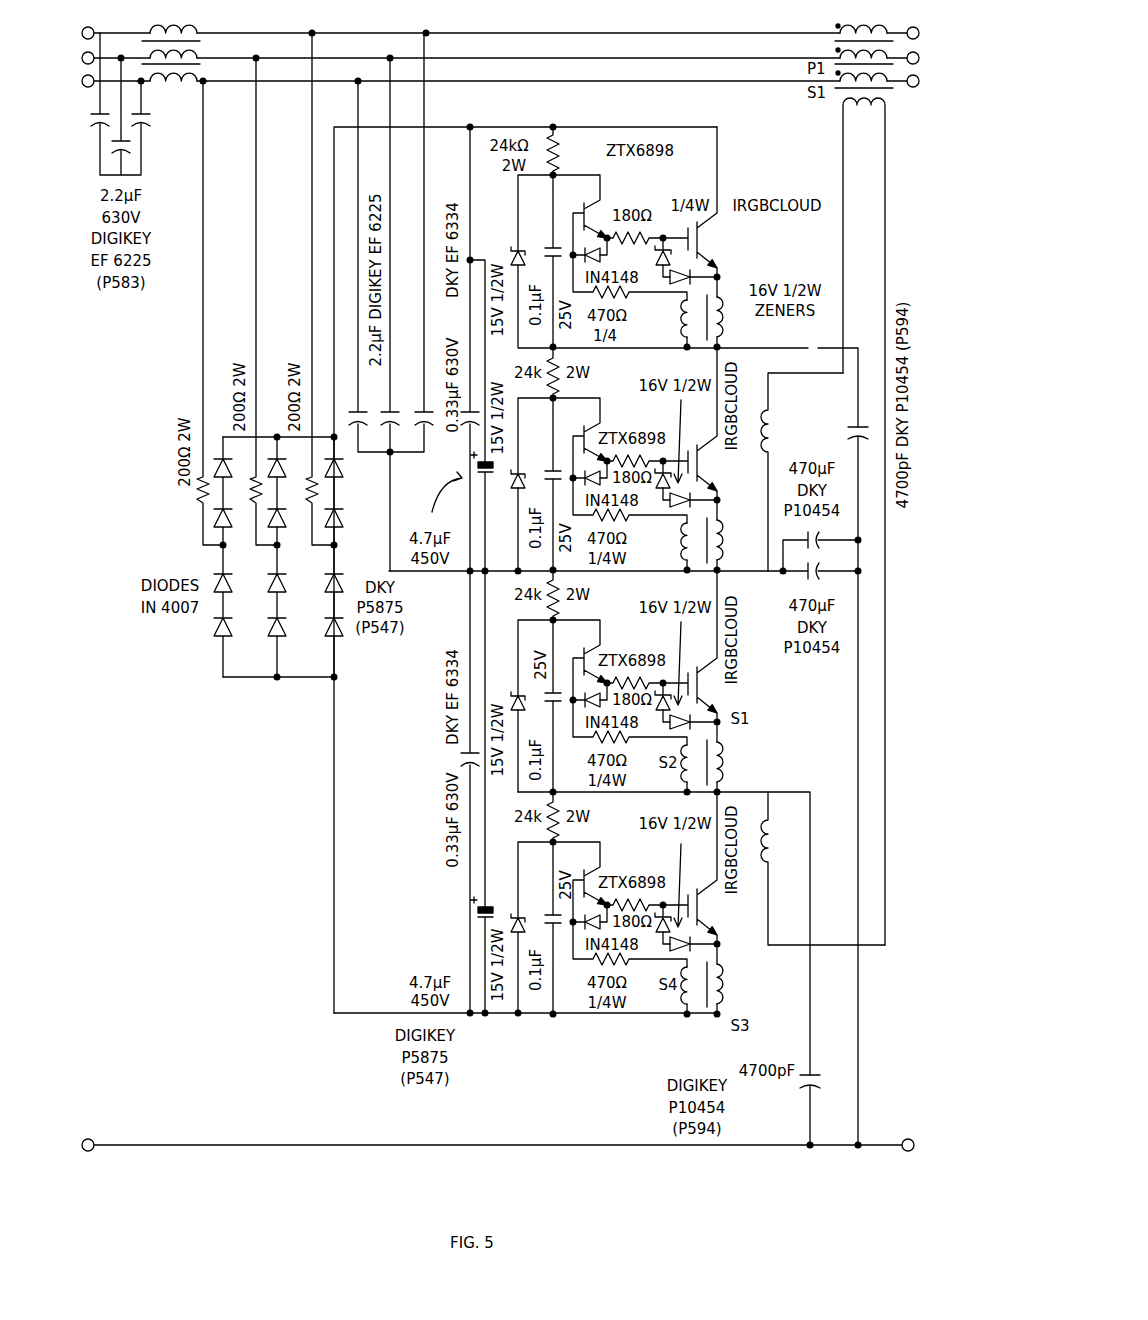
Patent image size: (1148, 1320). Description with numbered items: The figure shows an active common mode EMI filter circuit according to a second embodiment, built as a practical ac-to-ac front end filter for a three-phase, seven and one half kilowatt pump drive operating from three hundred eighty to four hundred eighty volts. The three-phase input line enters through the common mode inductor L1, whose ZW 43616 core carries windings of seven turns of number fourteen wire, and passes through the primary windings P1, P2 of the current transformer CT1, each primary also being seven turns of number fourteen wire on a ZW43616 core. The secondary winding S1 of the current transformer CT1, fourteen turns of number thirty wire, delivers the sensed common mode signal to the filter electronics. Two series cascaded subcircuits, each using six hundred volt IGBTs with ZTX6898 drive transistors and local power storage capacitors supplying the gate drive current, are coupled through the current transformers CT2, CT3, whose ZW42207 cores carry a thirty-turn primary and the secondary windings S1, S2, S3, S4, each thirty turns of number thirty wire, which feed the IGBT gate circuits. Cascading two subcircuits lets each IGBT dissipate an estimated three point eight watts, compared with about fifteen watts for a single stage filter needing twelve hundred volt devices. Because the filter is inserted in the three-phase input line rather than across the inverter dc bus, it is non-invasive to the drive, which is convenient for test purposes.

The common mode inductor L1 is at (171, 41).
The primary winding P1 is at (850, 27).
The primary winding P2 is at (850, 50).
The current transformer CT1 is at (882, 519).
The current transformer CT2 is at (802, 472).
The current transformer CT3 is at (823, 868).
The secondary winding S1 is at (733, 303).
The secondary winding S2 is at (672, 318).
The secondary winding S3 is at (739, 540).
The secondary winding S4 is at (672, 541).